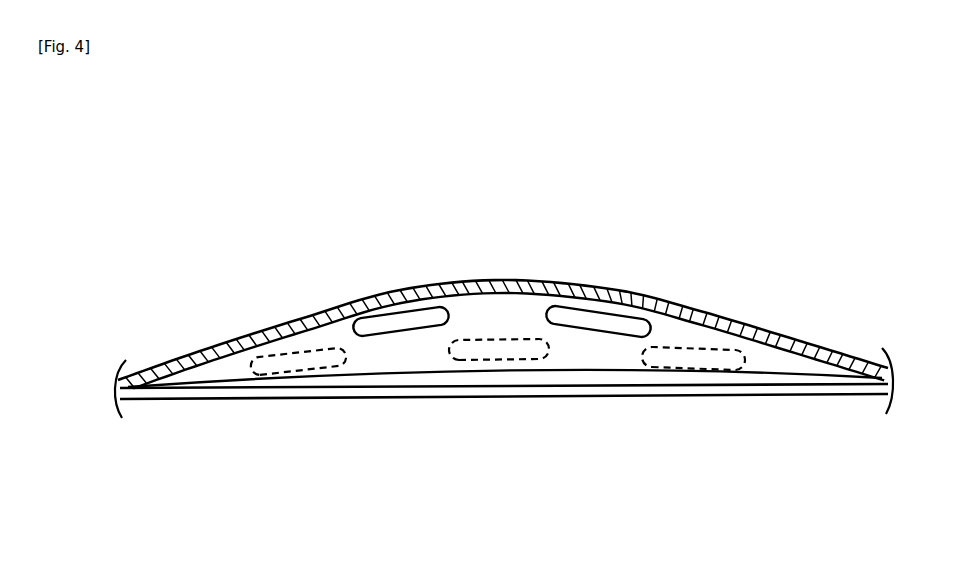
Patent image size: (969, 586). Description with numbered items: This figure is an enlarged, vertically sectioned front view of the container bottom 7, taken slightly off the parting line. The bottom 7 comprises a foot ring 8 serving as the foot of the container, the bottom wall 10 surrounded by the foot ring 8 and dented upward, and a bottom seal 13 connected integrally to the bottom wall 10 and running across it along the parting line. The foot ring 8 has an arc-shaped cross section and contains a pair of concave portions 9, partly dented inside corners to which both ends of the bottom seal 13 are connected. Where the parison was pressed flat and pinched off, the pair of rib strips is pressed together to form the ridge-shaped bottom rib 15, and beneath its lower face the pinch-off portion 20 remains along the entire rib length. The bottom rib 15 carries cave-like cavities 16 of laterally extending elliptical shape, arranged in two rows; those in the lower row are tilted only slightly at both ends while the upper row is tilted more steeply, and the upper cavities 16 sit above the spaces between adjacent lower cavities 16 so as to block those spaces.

The bottom 7 is at (147, 424).
The foot ring 8 is at (588, 394).
The concave portion 9 is at (870, 392).
The bottom wall 10 is at (532, 287).
The bottom seal 13 is at (417, 402).
The bottom rib 15 is at (562, 357).
The cavity 16 is at (405, 322).
The pinch-off portion 20 is at (315, 380).